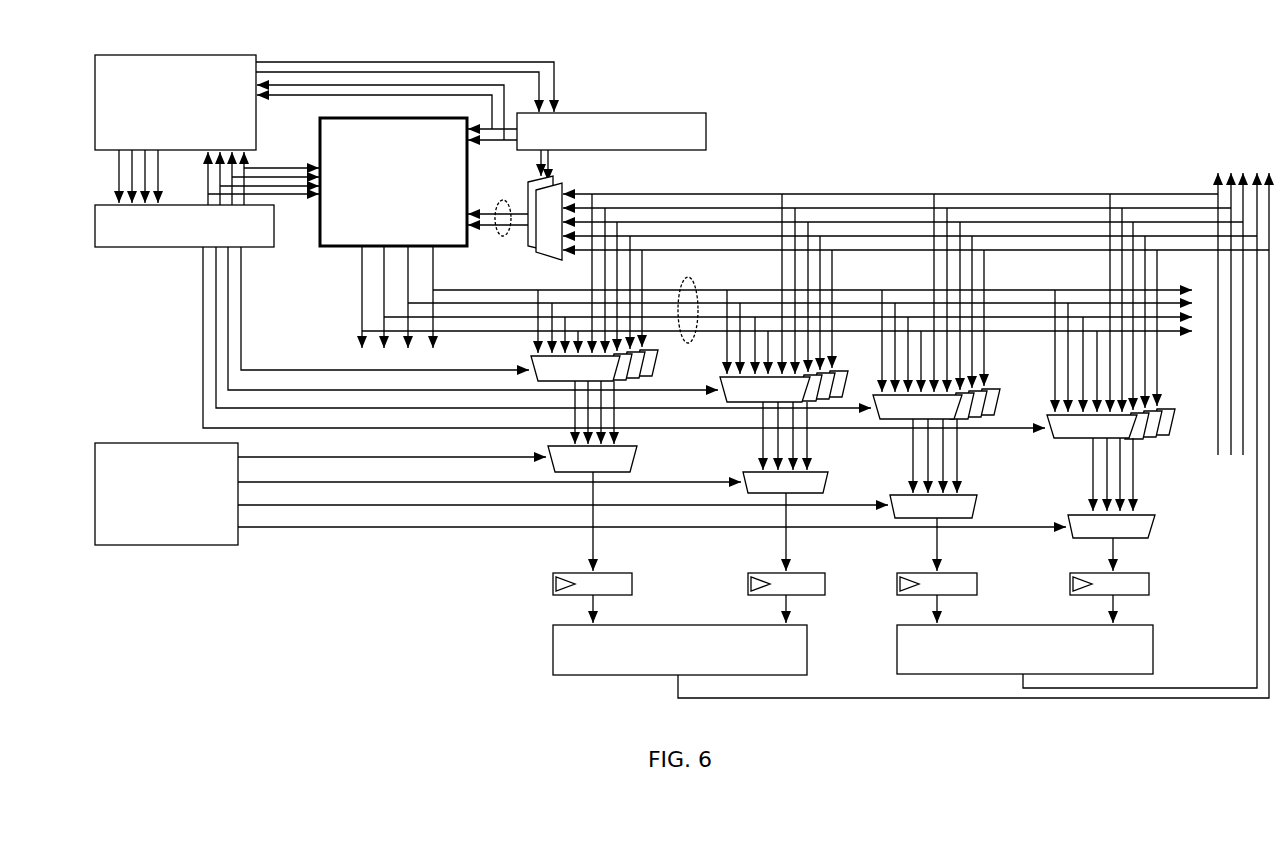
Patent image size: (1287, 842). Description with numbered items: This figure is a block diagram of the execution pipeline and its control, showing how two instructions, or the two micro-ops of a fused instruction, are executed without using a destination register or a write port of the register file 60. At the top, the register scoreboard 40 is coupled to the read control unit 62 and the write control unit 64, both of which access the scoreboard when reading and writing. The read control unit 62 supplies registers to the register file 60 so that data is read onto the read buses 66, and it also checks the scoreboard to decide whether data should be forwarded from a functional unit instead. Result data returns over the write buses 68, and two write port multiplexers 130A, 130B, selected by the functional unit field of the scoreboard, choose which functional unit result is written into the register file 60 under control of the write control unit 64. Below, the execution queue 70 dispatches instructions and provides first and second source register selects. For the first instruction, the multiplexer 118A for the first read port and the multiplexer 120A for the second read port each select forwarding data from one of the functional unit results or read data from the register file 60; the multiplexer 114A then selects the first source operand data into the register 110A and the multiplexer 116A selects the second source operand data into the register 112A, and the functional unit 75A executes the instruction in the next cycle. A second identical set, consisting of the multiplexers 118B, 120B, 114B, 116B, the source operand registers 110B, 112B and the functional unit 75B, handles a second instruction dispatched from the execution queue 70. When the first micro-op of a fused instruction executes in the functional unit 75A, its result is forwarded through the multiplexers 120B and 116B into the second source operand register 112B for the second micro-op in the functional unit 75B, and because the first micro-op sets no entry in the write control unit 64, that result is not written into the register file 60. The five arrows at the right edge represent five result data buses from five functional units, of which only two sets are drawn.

The register scoreboard 40 is at (256, 128).
The read control unit 62 is at (150, 247).
The register file 60 is at (320, 238).
The write control unit 64 is at (706, 140).
The write buses 68 is at (500, 200).
The multiplexer 130A is at (527, 242).
The multiplexer 130B is at (540, 258).
The read buses 66 is at (694, 280).
The execution queue 70 is at (152, 545).
The multiplexer 118A is at (628, 381).
The multiplexer 120A is at (820, 400).
The multiplexer 118B is at (972, 419).
The multiplexer 120B is at (1150, 438).
The multiplexer 114A is at (632, 472).
The multiplexer 116A is at (823, 493).
The multiplexer 114B is at (973, 518).
The multiplexer 116B is at (1148, 538).
The register 110A is at (552, 590).
The register 112A is at (747, 590).
The source operand register 110B is at (896, 590).
The source operand register 112B is at (1069, 590).
The functional unit 75A is at (553, 648).
The functional unit 75B is at (897, 648).